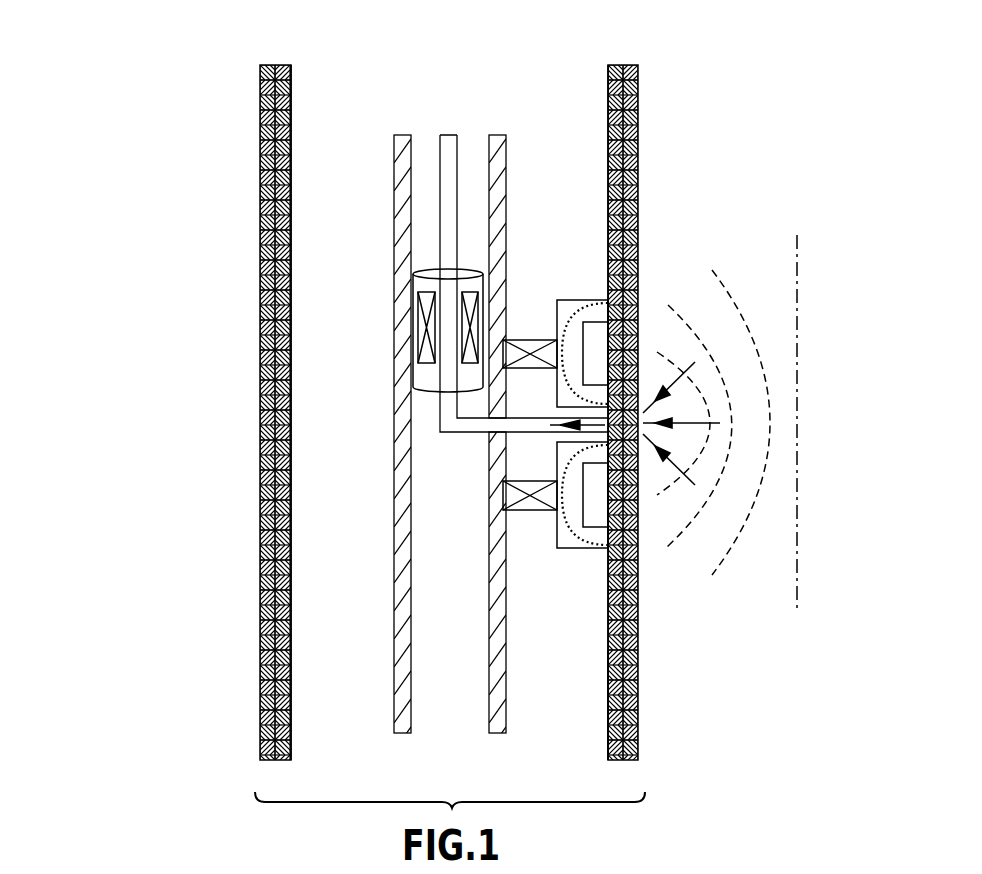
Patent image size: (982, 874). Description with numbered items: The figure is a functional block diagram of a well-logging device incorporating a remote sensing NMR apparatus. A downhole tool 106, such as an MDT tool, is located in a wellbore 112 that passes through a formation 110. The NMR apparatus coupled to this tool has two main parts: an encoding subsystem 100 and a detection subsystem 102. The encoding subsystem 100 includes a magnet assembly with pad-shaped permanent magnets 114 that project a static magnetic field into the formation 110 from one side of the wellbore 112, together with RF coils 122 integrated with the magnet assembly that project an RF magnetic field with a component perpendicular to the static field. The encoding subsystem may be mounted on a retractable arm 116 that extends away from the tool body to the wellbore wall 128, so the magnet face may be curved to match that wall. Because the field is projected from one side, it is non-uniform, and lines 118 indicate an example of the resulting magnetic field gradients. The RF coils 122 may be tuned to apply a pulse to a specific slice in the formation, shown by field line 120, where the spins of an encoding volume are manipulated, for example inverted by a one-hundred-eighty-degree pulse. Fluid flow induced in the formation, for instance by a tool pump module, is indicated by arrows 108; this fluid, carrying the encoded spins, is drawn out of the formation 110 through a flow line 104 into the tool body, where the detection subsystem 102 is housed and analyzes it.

The encoding subsystem 100 is at (510, 431).
The detection subsystem 102 is at (431, 249).
The flow line 104 is at (452, 150).
The downhole tool 106 is at (506, 672).
The arrows 108 is at (656, 497).
The formation 110 is at (222, 84).
The wellbore 112 is at (565, 72).
The pad-shaped permanent magnets 114 is at (596, 326).
The retractable arm 116 is at (538, 341).
The lines 118 is at (680, 318).
The field line 120 is at (668, 342).
The RF coils 122 is at (578, 548).
The wellbore wall 128 is at (608, 712).